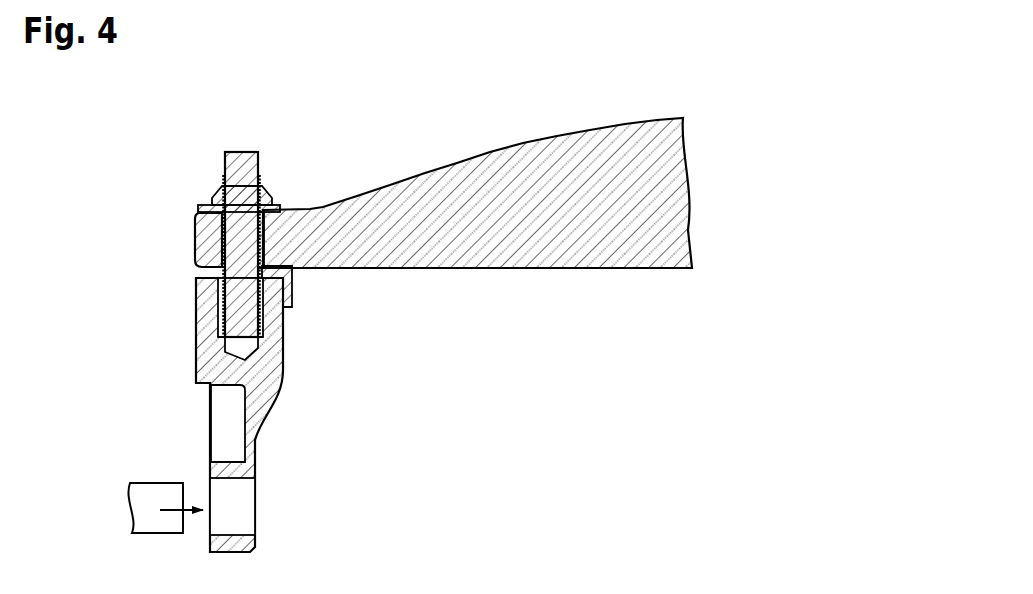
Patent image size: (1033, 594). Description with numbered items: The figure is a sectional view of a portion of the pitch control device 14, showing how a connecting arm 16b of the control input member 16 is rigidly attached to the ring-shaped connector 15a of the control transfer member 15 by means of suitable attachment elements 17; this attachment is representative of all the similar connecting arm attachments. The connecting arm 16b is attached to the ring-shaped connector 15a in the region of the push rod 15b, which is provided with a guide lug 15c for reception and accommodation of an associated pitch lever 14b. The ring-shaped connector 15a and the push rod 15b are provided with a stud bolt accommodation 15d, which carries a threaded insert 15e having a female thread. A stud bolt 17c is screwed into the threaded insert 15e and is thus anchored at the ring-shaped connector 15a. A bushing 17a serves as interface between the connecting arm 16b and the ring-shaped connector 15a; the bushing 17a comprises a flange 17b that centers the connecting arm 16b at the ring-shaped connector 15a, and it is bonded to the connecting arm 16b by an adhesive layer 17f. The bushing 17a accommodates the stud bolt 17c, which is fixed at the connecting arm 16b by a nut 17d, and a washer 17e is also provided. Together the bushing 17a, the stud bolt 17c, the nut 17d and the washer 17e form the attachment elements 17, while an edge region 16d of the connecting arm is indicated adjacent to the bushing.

The pitch control device 14 is at (160, 155).
The pitch lever 14b is at (145, 511).
The control transfer member 15 is at (294, 369).
The ring-shaped connector 15a is at (203, 300).
The push rod 15b is at (203, 358).
The guide lug 15c is at (240, 520).
The stud bolt accommodation 15d is at (244, 352).
The threaded insert 15e is at (240, 350).
The control input member 16 is at (544, 132).
The connecting arm 16b is at (572, 240).
The bracket edge 16d is at (274, 232).
The attachment elements 17 is at (270, 176).
The bushing 17a is at (200, 276).
The flange 17b is at (296, 300).
The stud bolt 17c is at (236, 152).
The nut 17d is at (216, 196).
The washer 17e is at (205, 208).
The adhesive layer 17f is at (278, 252).